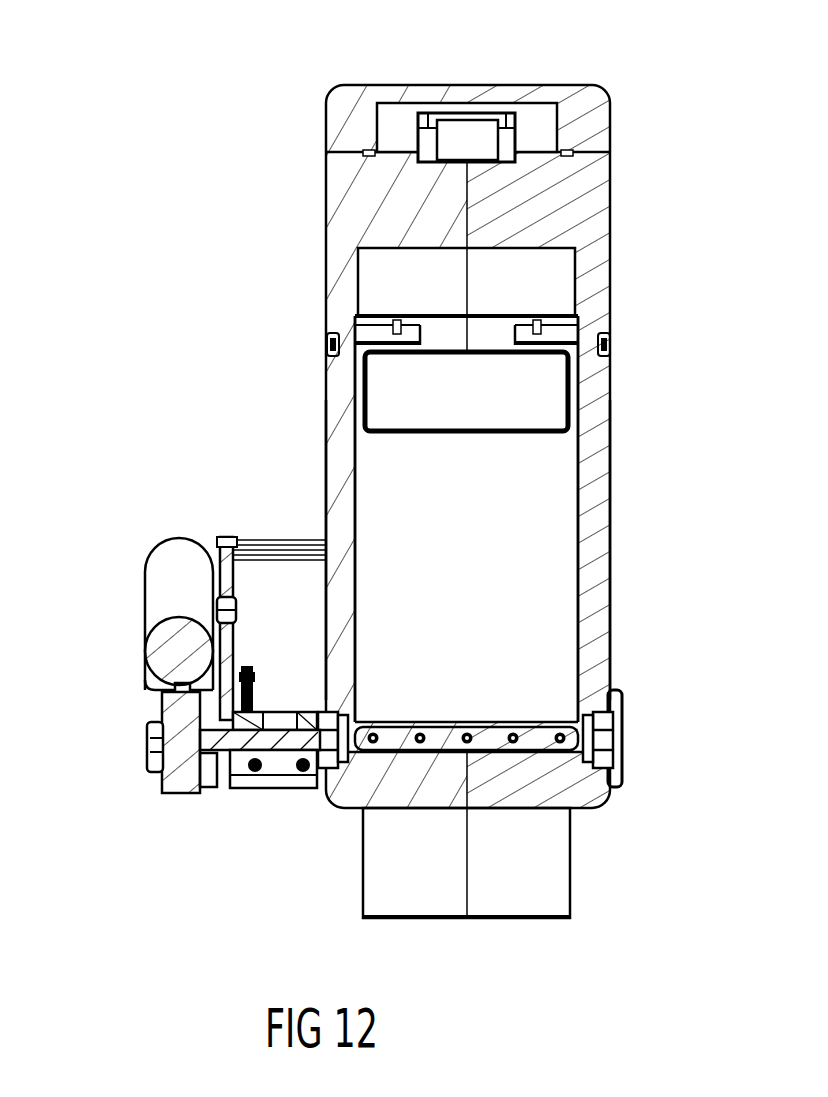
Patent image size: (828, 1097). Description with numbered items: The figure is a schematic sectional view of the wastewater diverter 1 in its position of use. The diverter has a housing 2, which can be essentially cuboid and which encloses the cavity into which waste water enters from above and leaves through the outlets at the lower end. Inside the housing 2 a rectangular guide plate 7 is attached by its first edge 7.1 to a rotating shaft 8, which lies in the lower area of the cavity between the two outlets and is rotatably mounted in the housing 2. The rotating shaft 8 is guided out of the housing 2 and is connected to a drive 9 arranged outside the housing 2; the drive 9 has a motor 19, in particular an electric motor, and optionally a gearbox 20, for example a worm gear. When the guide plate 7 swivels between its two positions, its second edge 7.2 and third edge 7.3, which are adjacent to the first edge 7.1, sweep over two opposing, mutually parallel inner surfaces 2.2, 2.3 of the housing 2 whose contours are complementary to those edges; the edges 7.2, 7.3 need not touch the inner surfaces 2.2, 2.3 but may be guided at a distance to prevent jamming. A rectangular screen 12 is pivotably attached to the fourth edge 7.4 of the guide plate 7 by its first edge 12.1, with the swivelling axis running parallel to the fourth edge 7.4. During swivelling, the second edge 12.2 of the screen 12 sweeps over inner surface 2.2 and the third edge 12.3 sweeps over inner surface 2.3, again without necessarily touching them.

The wastewater diverter 1 is at (298, 62).
The housing 2 is at (593, 193).
The inner surface 2.2 is at (350, 525).
The inner surface 2.3 is at (588, 608).
The guide plate 7 is at (572, 499).
The first edge 7.1 is at (408, 722).
The second edge 7.2 is at (357, 592).
The third edge 7.3 is at (578, 574).
The fourth edge 7.4 is at (457, 362).
The rotating shaft 8 is at (532, 736).
The drive 9 is at (124, 678).
The screen 12 is at (380, 388).
The first edge 12.1 is at (500, 322).
The second edge 12.2 is at (353, 367).
The third edge 12.3 is at (600, 372).
The motor 19 is at (162, 590).
The gearbox 20 is at (178, 778).